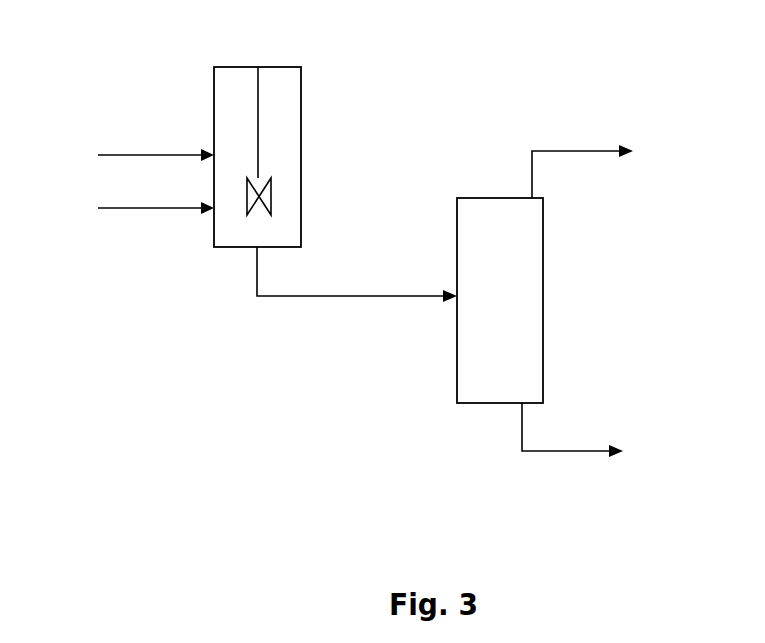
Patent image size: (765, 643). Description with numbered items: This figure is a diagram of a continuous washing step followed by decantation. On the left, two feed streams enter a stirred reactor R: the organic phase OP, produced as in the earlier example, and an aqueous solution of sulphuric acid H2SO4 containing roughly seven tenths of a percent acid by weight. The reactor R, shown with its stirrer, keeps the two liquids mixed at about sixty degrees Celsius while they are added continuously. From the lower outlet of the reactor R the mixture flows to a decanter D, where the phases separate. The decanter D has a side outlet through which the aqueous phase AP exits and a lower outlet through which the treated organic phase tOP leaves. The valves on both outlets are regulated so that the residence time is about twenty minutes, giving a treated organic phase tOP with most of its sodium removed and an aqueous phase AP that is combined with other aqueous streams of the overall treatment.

The reactor R is at (257, 133).
The decanter D is at (500, 280).
The organic phase OP is at (156, 142).
The aqueous solution of sulphuric acid H2SO4 is at (122, 229).
The aqueous phase AP is at (613, 170).
The treated organic phase tOP is at (601, 450).